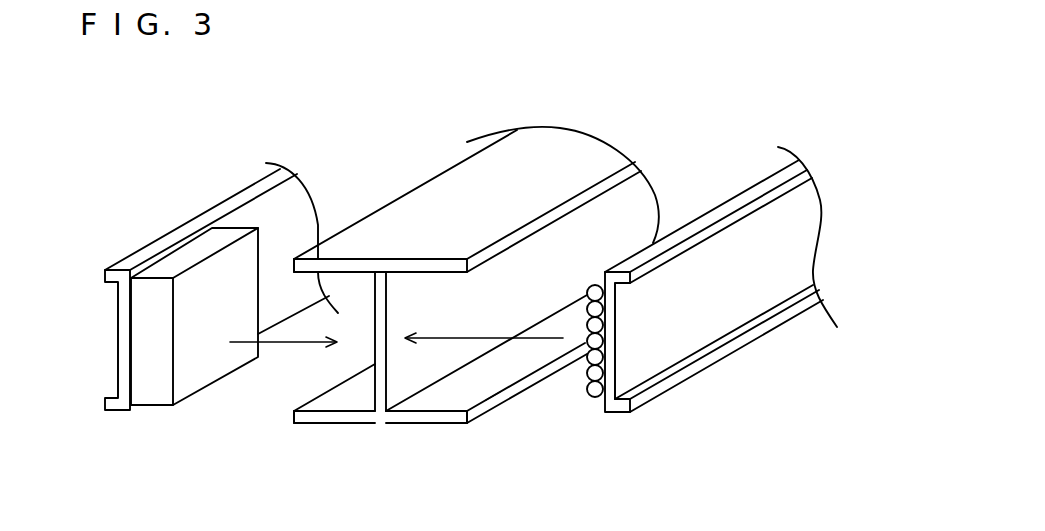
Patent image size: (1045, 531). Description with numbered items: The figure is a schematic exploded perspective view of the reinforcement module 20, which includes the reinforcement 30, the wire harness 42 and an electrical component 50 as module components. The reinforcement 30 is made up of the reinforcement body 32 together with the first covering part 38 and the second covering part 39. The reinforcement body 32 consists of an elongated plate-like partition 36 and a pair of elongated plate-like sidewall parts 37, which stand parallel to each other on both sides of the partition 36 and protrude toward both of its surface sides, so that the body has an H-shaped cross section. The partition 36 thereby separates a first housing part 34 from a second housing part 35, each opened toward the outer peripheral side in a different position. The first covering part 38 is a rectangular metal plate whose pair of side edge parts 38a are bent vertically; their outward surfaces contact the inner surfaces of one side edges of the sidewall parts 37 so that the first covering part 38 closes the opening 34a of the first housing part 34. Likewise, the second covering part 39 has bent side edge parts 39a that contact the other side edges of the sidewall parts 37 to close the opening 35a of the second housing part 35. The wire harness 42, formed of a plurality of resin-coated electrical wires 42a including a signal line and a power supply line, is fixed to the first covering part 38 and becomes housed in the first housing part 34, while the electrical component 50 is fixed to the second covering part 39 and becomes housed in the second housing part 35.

The reinforcement module 20 is at (414, 109).
The reinforcement 30 is at (379, 199).
The reinforcement body 32 is at (384, 425).
The first housing part 34 is at (420, 405).
The opening of the first housing part 34a is at (484, 394).
The second housing part 35 is at (336, 423).
The opening of the second housing part 35a is at (294, 413).
The partition 36 is at (425, 297).
The sidewall parts 37 is at (366, 265).
The first covering part 38 is at (622, 412).
The side edge parts of the first covering part 38a is at (668, 256).
The second covering part 39 is at (130, 409).
The side edge parts of the second covering part 39a is at (107, 282).
The wire harness 42 is at (593, 398).
The electrical wires 42a is at (584, 358).
The electrical component 50 is at (192, 397).